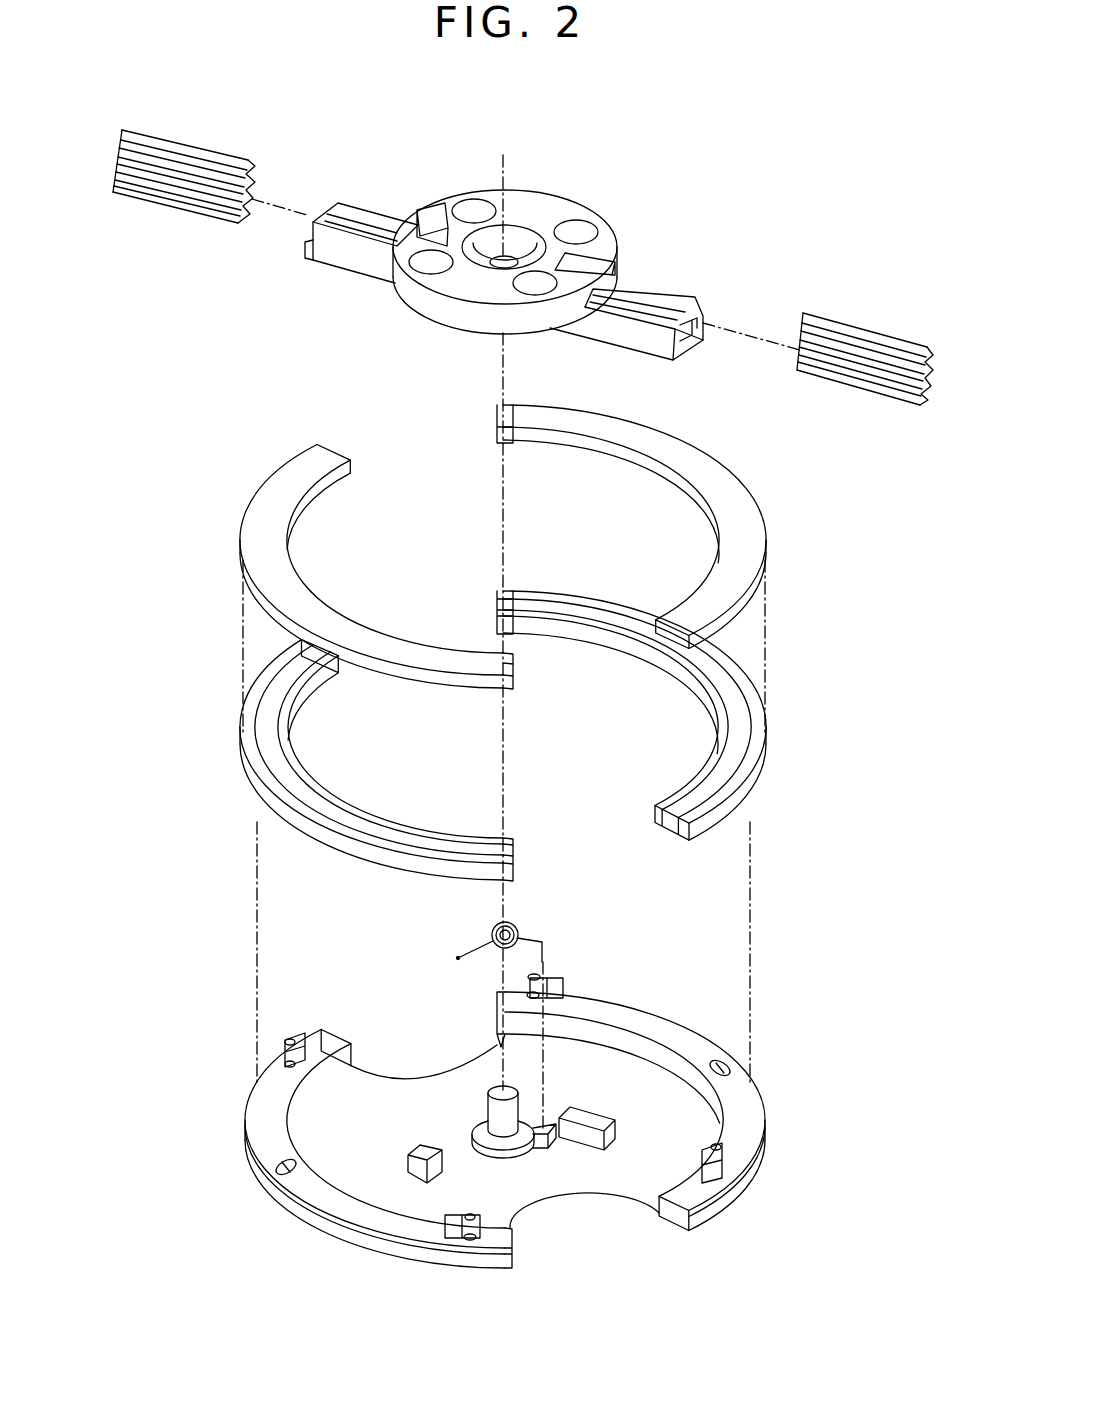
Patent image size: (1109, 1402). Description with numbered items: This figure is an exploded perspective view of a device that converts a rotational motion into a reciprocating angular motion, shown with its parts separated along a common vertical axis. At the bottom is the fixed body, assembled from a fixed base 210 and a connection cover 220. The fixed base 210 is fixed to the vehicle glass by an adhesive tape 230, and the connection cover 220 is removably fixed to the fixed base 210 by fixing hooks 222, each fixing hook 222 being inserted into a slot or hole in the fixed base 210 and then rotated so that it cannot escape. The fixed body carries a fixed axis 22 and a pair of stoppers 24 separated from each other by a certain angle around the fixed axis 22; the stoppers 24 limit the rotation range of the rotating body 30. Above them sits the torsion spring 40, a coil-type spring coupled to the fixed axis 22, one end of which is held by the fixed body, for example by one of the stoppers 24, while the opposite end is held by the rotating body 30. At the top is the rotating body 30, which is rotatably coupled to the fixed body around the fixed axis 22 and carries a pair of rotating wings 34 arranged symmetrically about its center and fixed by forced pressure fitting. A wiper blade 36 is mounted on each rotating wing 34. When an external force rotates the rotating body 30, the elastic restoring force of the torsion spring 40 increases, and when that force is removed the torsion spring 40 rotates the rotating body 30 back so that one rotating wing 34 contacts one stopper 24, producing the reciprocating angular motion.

The rotating body 30 is at (541, 205).
The rotating wing 34 is at (360, 213).
The wiper blade 36 is at (190, 150).
The adhesive tape 230 is at (270, 485).
The fixed base 210 is at (248, 730).
The connection cover 220 is at (357, 1080).
The fixing hook 222 is at (560, 978).
The stopper 24 is at (595, 1117).
The fixed axis 22 is at (495, 1088).
The torsion spring 40 is at (535, 938).